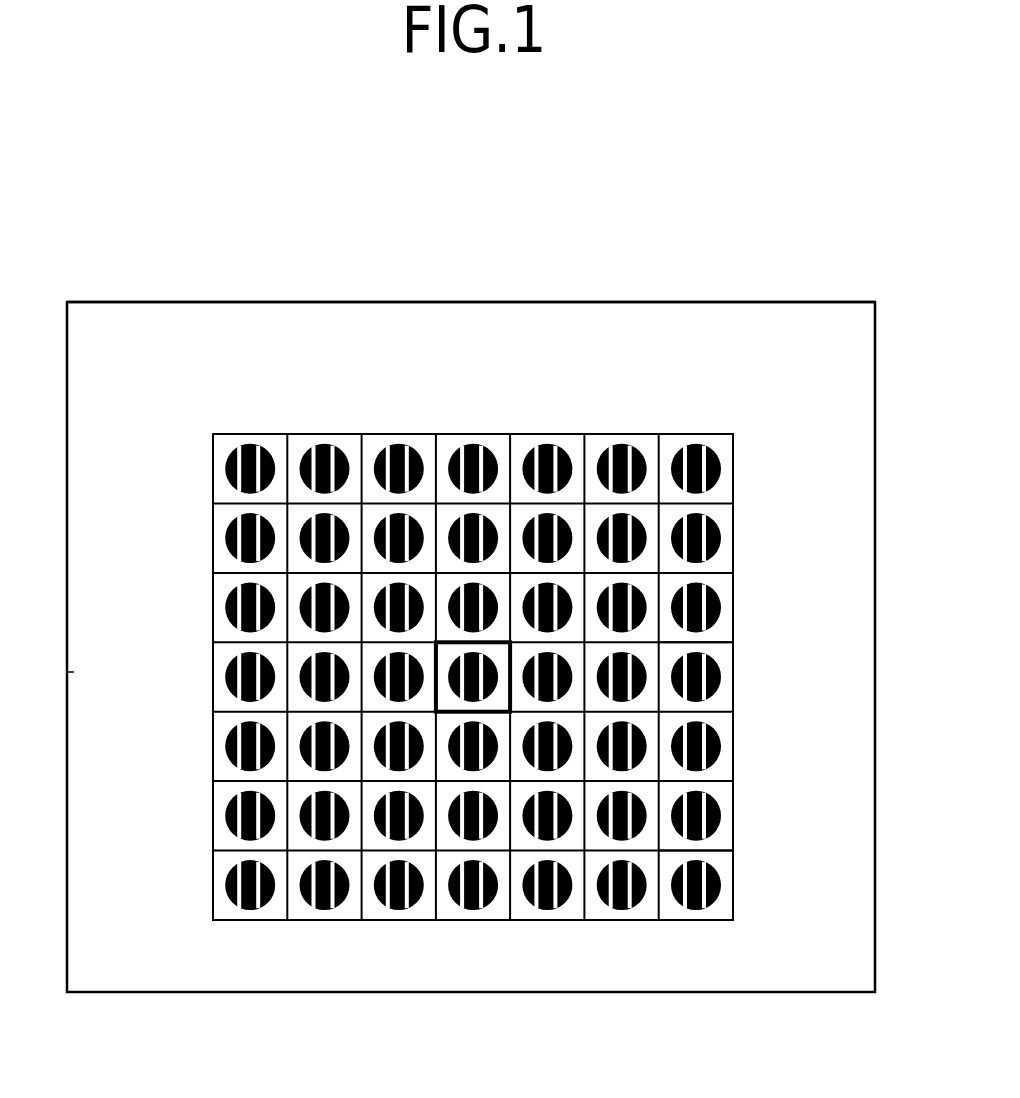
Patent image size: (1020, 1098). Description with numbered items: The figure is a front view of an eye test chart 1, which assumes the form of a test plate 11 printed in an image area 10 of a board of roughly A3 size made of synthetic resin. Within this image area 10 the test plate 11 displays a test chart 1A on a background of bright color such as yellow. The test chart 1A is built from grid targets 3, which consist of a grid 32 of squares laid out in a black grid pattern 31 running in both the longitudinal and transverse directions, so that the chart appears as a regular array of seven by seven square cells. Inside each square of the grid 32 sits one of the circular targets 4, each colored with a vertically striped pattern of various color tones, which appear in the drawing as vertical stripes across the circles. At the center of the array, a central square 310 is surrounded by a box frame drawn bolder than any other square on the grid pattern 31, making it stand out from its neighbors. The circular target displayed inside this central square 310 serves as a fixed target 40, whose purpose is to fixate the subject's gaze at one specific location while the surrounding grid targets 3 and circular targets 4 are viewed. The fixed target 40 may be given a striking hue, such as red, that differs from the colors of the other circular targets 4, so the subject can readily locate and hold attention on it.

The eye test chart 1 is at (490, 250).
The test chart 1A is at (412, 423).
The image area 10 is at (117, 326).
The test plate 11 is at (630, 287).
The grid targets 3 is at (714, 574).
The black grid pattern 31 is at (708, 852).
The grid 32 is at (683, 656).
The central square 310 is at (437, 714).
The circular targets 4 is at (717, 748).
The fixed target 40 is at (450, 680).